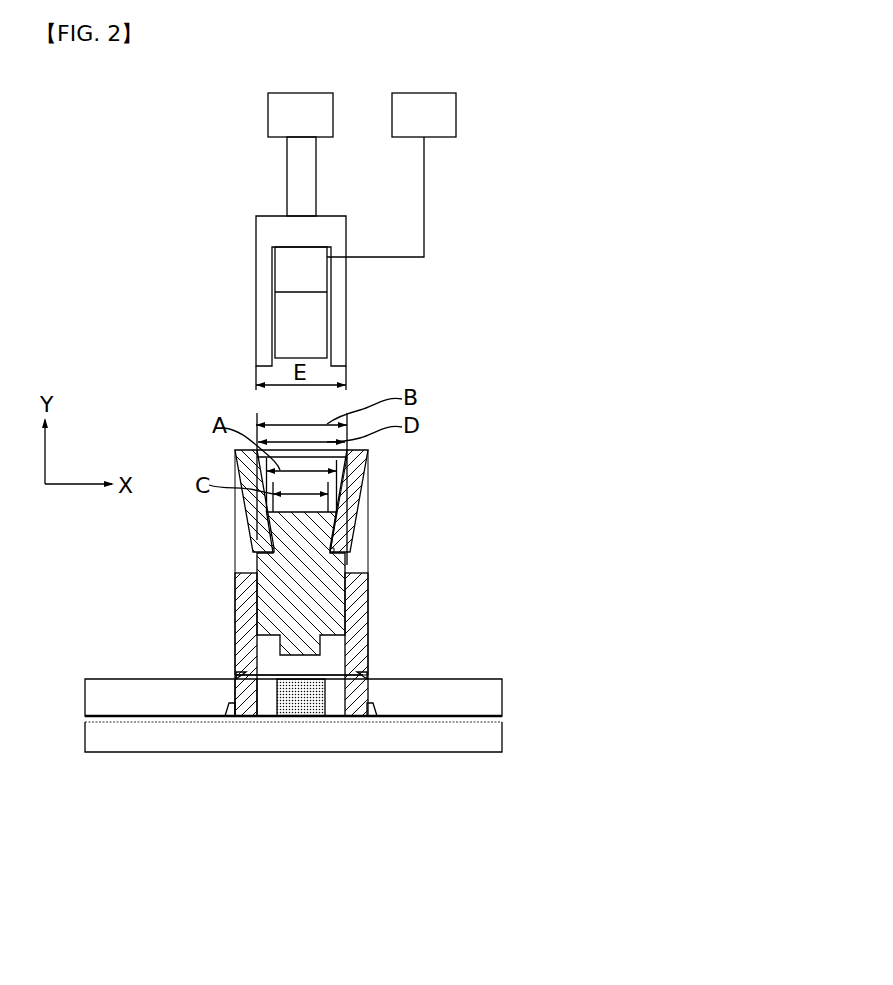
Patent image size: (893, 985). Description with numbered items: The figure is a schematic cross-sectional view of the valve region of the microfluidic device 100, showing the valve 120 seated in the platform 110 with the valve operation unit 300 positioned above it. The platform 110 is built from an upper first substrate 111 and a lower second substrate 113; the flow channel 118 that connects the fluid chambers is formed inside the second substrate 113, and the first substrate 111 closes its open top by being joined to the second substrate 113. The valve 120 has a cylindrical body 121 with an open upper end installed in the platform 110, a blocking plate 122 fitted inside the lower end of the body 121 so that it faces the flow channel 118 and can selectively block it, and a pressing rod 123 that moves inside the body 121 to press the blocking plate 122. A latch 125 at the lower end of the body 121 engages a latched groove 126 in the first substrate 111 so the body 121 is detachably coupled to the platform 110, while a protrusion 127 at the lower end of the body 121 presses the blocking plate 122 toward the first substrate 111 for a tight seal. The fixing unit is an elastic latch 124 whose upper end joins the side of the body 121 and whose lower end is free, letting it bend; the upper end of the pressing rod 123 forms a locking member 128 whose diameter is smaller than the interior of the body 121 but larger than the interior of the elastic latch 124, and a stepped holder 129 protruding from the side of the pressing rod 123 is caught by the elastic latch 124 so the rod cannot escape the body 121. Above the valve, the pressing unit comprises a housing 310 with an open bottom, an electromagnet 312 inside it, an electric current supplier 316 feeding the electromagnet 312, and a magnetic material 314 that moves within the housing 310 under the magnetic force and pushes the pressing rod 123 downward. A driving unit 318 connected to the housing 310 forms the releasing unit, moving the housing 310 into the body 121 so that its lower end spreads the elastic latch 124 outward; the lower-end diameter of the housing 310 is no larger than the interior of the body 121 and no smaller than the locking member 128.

The microfluidic device 100 is at (493, 647).
The platform 110 is at (329, 754).
The first substrate 111 is at (503, 689).
The flow channel 118 is at (503, 717).
The second substrate 113 is at (500, 741).
The valve 120 is at (288, 630).
The body 121 is at (367, 618).
The blocking plate 122 is at (302, 717).
The pressing rod 123 is at (312, 588).
The elastic latch 124 is at (352, 503).
The latch 125 is at (232, 700).
The latched groove 126 is at (236, 714).
The protrusion 127 is at (360, 673).
The locking member 128 is at (342, 482).
The stepped holder 129 is at (362, 562).
The valve operation unit 300 is at (331, 217).
The housing 310 is at (342, 295).
The electromagnet 312 is at (275, 283).
The magnetic material 314 is at (310, 333).
The electric current supplier 316 is at (456, 110).
The driving unit 318 is at (268, 107).